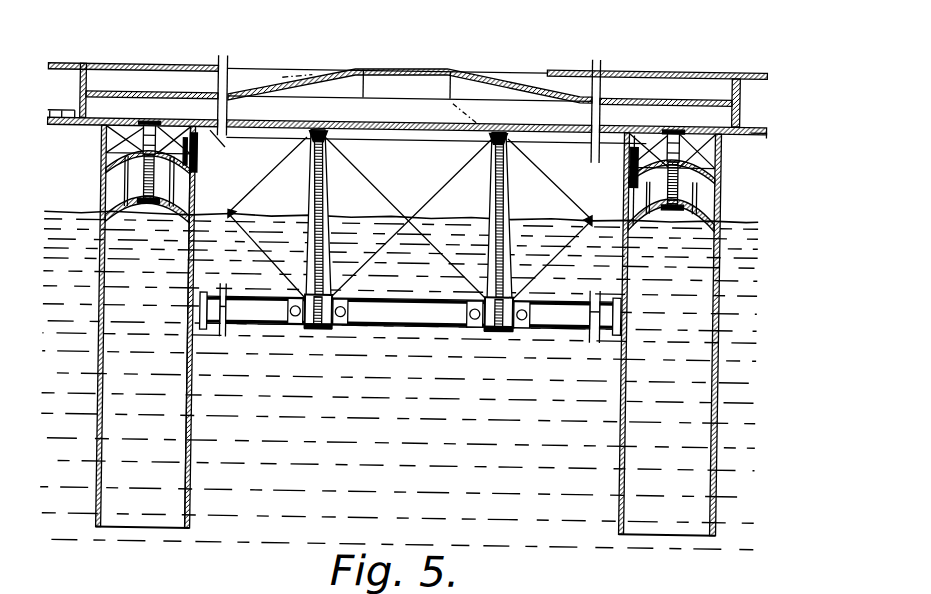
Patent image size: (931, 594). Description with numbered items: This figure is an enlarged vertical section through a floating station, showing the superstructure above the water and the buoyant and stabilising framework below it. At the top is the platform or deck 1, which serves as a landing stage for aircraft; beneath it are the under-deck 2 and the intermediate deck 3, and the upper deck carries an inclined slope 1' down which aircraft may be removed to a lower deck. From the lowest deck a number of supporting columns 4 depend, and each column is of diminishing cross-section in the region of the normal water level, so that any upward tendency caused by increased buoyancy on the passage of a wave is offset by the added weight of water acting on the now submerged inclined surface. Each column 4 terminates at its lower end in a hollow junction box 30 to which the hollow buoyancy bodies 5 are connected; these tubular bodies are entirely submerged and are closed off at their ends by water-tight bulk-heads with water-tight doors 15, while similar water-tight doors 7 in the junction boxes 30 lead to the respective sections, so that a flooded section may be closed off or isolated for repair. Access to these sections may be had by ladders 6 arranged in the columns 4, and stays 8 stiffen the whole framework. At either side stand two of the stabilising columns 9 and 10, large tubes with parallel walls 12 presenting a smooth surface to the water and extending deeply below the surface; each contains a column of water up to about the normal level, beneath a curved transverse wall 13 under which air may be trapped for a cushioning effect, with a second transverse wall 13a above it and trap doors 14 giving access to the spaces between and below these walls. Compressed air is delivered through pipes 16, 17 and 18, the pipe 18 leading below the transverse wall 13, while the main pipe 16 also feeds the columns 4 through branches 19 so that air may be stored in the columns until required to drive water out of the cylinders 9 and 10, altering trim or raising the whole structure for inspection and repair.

The platform or deck 1 is at (408, 73).
The inclined slope 1' is at (410, 71).
The under-deck 2 is at (259, 122).
The intermediate deck 3 is at (188, 94).
The supporting column 4 is at (325, 177).
The buoyancy body 5 is at (388, 325).
The ladder 6 is at (506, 189).
The water-tight door 7 is at (293, 302).
The stay 8 is at (431, 192).
The stabilising column 9 is at (172, 452).
The stabilising column 10 is at (642, 454).
The parallel wall 12 is at (192, 369).
The transverse wall or partition 13 is at (173, 207).
The second transverse wall or partition 13a is at (170, 163).
The trap door 14 is at (102, 164).
The water-tight door 15 is at (289, 315).
The main air pipe 16 is at (582, 140).
The air pipe 17 is at (618, 147).
The air pipe 18 is at (622, 198).
The branch 19 is at (267, 217).
The junction box 30 is at (318, 332).